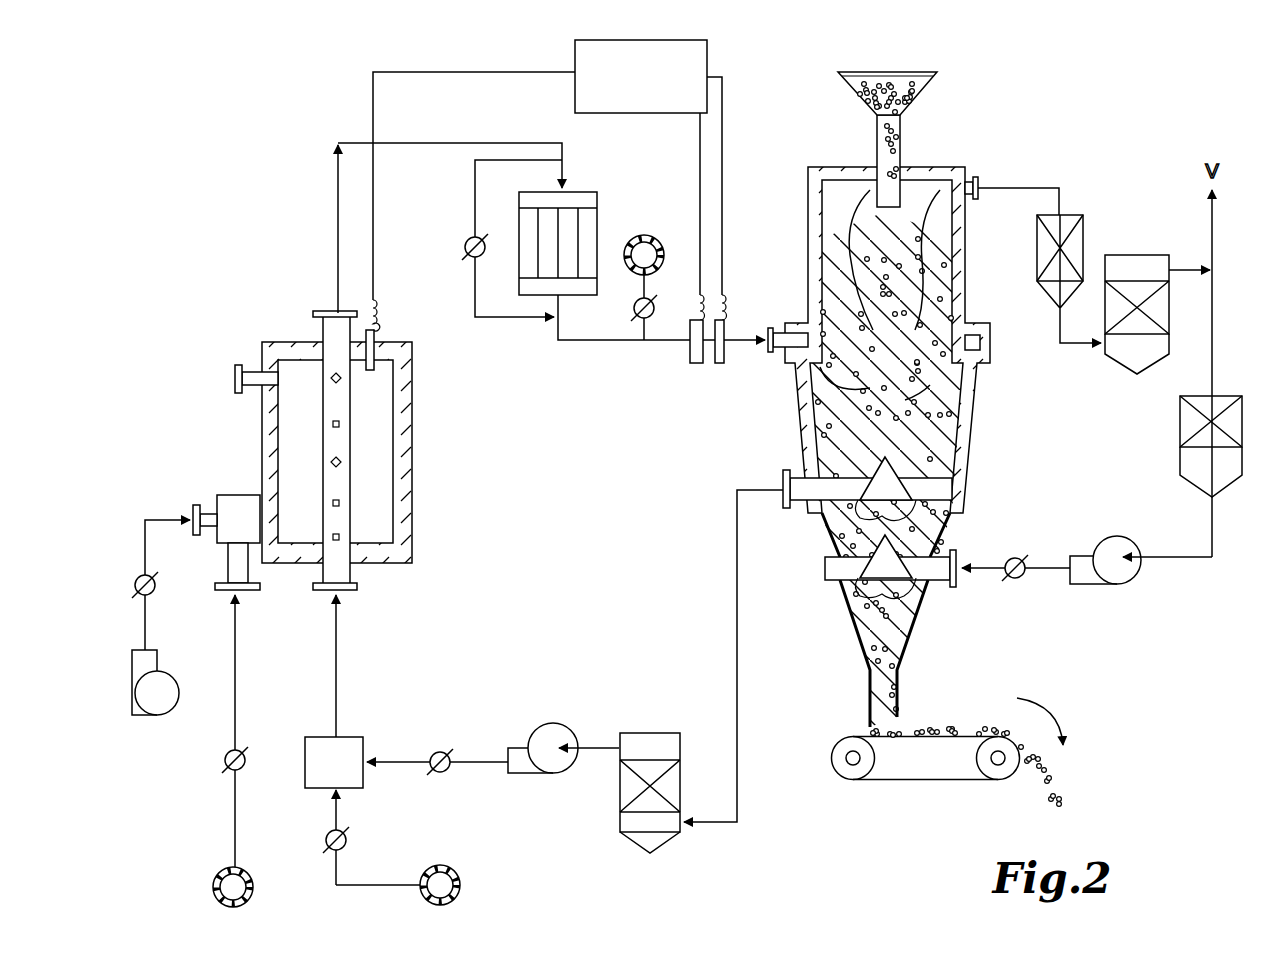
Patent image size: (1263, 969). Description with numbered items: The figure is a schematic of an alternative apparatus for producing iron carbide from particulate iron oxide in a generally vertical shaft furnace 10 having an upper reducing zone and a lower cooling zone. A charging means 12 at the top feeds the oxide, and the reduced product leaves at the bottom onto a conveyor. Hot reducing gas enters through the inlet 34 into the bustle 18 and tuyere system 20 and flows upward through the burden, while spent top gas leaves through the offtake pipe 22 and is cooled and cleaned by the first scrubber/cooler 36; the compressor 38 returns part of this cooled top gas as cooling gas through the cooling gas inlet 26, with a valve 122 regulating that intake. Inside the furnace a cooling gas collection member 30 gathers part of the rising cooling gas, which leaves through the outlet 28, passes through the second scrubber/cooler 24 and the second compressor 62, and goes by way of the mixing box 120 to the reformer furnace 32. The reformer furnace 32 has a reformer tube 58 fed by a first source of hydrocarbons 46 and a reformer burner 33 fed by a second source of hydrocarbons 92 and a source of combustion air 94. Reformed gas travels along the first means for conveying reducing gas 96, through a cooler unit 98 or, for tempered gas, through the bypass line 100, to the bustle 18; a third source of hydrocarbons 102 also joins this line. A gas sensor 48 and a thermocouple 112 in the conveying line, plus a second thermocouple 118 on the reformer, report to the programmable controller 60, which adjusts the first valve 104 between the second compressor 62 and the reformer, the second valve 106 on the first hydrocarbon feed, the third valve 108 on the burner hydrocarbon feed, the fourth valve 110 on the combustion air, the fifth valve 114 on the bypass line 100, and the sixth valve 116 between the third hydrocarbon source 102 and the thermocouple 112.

The vertical shaft furnace 10 is at (808, 220).
The means for charging particulate iron oxide material 12 is at (878, 82).
The bustle 18 is at (803, 333).
The tuyere system 20 is at (981, 352).
The spent top gas offtake pipe 22 is at (976, 178).
The second scrubber/cooler 24 is at (630, 838).
The cooling gas inlet 26 is at (956, 590).
The cooling zone outlet 28 is at (783, 482).
The cooling gas collection member 30 is at (900, 473).
The reformer furnace 32 is at (264, 345).
The reformer burner 33 is at (240, 495).
The reducing gas inlet 34 is at (768, 330).
The first scrubber/cooler 36 is at (1112, 358).
The compressor 38 is at (1118, 560).
The first source of hydrocarbons 46 is at (458, 870).
The gas sensor 48 is at (716, 363).
The reformer tube 58 is at (318, 311).
The programmable controller 60 is at (547, 170).
The second compressor 62 is at (563, 748).
The second source of hydrocarbons 92 is at (250, 870).
The source of combustion air 94 is at (161, 617).
The first means for conveying reducing gas 96 is at (338, 215).
The cooler unit 98 is at (592, 190).
The bypass line 100 is at (475, 272).
The third source of hydrocarbons 102 is at (652, 237).
The first valve 104 is at (450, 752).
The second valve 106 is at (347, 838).
The third valve 108 is at (230, 768).
The fourth valve 110 is at (152, 603).
The thermocouple 112 is at (690, 356).
The fifth valve 114 is at (468, 240).
The sixth valve 116 is at (633, 312).
The second thermocouple 118 is at (374, 335).
The mixing box 120 is at (334, 691).
The valve 122 is at (1020, 558).